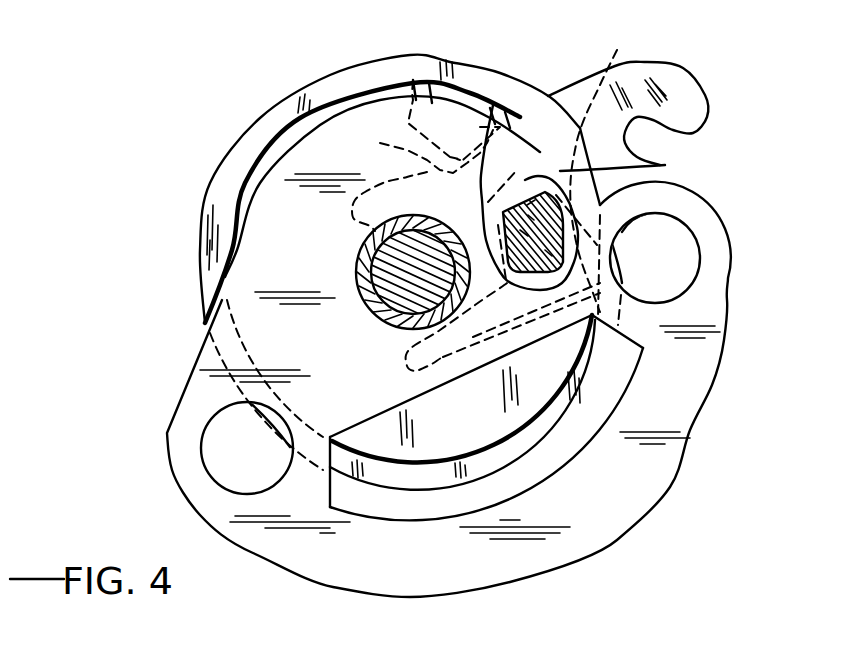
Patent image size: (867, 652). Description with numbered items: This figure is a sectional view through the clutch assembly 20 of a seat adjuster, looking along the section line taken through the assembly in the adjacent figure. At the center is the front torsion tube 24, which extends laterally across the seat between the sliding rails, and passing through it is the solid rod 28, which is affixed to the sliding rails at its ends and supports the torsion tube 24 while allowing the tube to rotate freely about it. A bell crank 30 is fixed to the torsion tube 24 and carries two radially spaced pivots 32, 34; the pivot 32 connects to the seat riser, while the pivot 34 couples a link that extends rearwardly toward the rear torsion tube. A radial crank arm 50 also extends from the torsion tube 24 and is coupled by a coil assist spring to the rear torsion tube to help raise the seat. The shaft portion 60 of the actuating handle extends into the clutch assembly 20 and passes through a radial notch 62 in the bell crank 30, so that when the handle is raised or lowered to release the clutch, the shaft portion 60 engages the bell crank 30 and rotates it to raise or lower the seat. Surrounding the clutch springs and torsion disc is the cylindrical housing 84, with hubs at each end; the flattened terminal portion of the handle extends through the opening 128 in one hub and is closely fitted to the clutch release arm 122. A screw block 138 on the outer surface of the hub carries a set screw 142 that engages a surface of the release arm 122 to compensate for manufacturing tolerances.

The clutch assembly 20 is at (197, 160).
The front torsion tube 24 is at (358, 282).
The solid rod 28 is at (357, 247).
The bell crank 30 is at (690, 432).
The pivot 32 is at (700, 262).
The pivot 34 is at (205, 425).
The radial crank arm 50 is at (683, 68).
The shaft portion 60 is at (530, 193).
The radial notch 62 is at (665, 165).
The cylindrical housing 84 is at (258, 121).
The clutch release arm 122 is at (411, 150).
The opening 128 is at (441, 244).
The screw block 138 is at (414, 72).
The set screw 142 is at (457, 180).